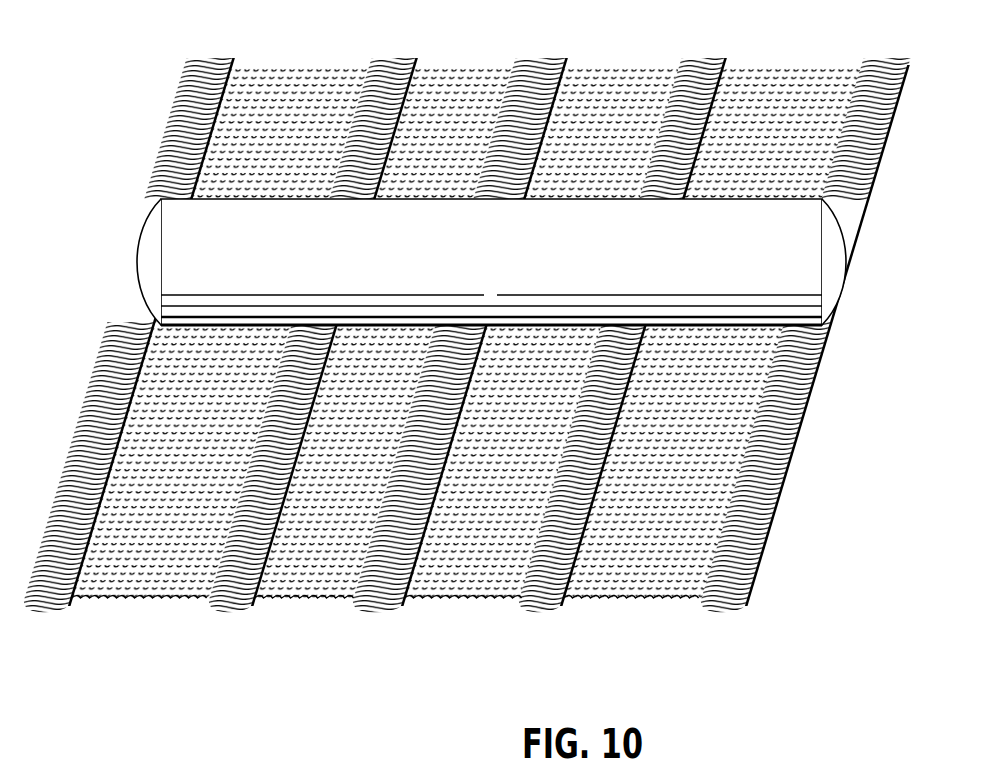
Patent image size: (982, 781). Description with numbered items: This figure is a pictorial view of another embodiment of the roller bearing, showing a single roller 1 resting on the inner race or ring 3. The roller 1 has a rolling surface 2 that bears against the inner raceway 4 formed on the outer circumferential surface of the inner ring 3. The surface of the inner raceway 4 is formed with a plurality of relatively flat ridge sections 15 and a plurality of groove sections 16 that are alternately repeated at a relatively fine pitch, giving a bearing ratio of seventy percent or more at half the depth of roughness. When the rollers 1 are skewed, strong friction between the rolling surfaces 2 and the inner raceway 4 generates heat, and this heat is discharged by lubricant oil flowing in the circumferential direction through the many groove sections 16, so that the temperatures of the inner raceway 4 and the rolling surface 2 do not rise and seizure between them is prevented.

The roller 1 is at (767, 307).
The rolling surface 2 is at (500, 185).
The inner race or ring 3 is at (465, 350).
The inner raceway 4 is at (708, 400).
The ridge section 15 is at (182, 592).
The groove section 16 is at (213, 82).